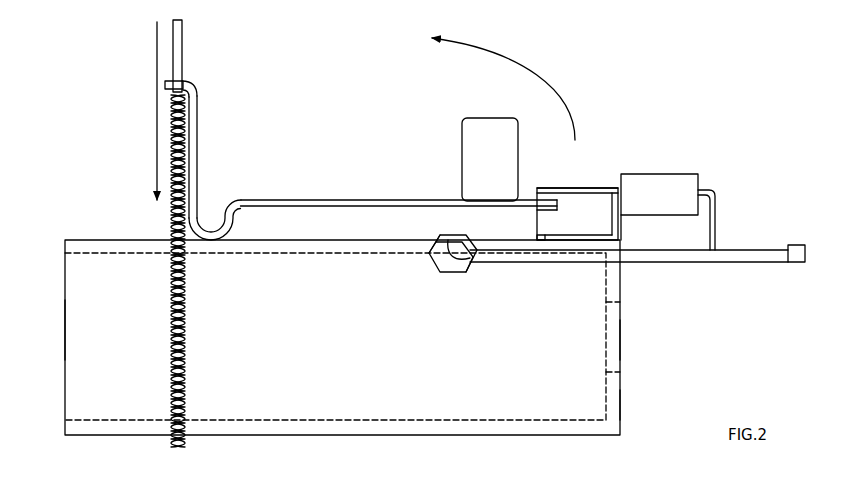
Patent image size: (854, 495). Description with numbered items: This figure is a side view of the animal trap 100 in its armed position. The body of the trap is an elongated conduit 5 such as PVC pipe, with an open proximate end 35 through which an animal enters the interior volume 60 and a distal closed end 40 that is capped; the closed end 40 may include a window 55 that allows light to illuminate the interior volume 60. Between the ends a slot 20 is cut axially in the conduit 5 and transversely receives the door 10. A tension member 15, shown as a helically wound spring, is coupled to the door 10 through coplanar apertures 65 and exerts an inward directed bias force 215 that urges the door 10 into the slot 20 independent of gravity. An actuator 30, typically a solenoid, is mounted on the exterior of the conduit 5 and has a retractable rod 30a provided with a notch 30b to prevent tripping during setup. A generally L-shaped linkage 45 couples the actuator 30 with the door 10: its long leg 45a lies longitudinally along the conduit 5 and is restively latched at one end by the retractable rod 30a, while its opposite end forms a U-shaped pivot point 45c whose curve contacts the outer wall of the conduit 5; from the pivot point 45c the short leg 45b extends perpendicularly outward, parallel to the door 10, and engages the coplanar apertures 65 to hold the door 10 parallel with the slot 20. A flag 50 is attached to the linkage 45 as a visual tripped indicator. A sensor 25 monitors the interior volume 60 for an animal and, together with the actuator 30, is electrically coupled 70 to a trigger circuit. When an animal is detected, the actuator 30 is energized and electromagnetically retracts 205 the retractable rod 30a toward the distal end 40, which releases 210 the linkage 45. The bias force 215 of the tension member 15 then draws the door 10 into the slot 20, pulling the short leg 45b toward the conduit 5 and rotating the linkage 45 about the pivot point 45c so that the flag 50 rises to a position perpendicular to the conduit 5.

The animal trap 100 is at (808, 49).
The elongated conduit 5 is at (533, 437).
The door 10 is at (180, 52).
The tension member 15 is at (184, 446).
The slot 20 is at (170, 240).
The sensor 25 is at (437, 252).
The actuator 30 is at (665, 182).
The retractable rod 30a is at (598, 190).
The notch 30b is at (575, 195).
The proximate end 35 is at (65, 332).
The distal closed end 40 is at (620, 405).
The linkage 45 is at (373, 168).
The long leg 45a is at (390, 188).
The short leg 45b is at (198, 150).
The pivot point 45c is at (215, 237).
The flag 50 is at (487, 137).
The window 55 is at (624, 338).
The interior volume 60 is at (362, 348).
The coplanar apertures 65 is at (189, 90).
The electrical coupling 70 is at (805, 252).
The retraction of the retractable rod 205 is at (588, 215).
The release of the linkage 210 is at (578, 128).
The inward directed bias force 215 is at (157, 110).